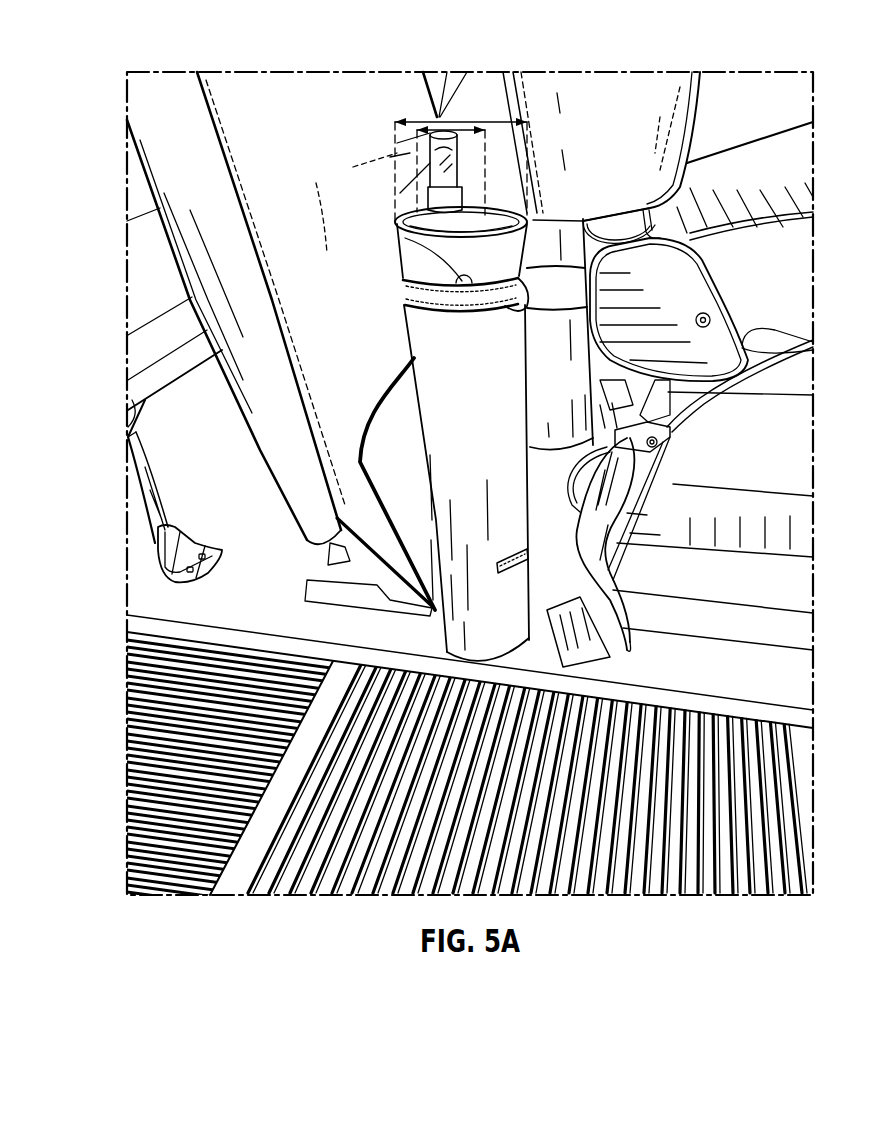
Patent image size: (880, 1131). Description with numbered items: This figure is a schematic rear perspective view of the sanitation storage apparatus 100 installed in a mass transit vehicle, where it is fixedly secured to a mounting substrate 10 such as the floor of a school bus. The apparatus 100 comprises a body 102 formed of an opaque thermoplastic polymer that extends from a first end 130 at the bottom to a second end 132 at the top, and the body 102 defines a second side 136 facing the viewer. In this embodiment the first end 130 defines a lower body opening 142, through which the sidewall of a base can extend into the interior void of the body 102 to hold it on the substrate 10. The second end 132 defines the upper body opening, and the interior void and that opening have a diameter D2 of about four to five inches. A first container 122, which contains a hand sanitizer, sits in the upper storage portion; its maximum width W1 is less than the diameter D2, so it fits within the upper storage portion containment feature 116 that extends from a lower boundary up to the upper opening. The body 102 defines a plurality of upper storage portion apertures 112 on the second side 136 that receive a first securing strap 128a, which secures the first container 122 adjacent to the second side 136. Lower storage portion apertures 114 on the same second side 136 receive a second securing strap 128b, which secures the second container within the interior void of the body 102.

The sanitation storage apparatus 100 is at (154, 29).
The mounting substrate 10 is at (256, 612).
The body 102 is at (440, 437).
The upper storage portion apertures 112 is at (397, 237).
The lower storage portion apertures 114 is at (501, 655).
The upper storage portion containment feature 116 is at (401, 258).
The first container 122 is at (470, 222).
The first securing strap 128a is at (405, 300).
The second securing strap 128b is at (520, 557).
The first end 130 is at (438, 650).
The lower body opening 142 is at (371, 596).
The second end 132 is at (477, 228).
The second side 136 is at (474, 395).
The interior void diameter D2 is at (417, 122).
The first container maximum width W1 is at (440, 117).